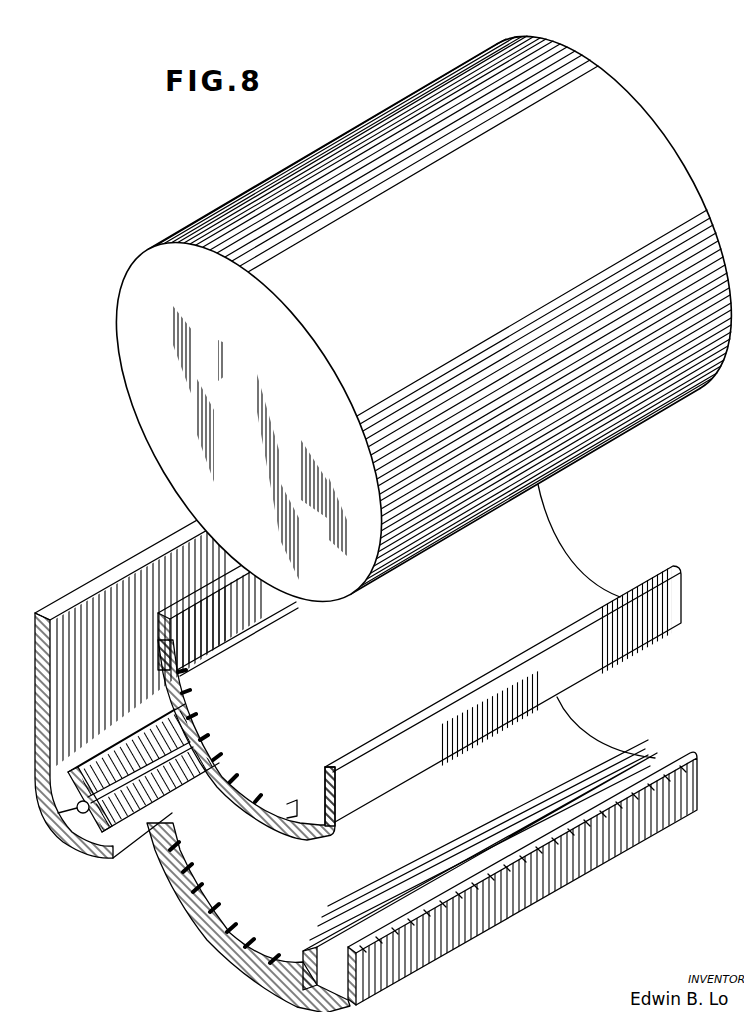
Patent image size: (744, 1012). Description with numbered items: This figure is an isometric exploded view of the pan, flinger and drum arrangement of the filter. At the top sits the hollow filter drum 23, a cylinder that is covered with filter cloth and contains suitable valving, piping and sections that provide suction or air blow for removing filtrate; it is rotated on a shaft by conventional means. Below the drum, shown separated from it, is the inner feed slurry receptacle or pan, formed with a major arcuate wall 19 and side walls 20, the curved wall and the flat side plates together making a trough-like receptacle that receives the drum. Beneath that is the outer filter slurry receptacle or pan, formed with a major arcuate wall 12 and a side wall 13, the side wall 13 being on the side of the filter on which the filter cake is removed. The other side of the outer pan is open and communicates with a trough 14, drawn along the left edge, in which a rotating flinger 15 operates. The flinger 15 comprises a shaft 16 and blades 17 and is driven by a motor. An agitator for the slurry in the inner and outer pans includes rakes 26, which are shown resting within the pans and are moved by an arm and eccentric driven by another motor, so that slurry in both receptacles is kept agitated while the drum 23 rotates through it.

The major arcuate wall 12 is at (226, 957).
The side wall 13 is at (443, 940).
The trough 14 is at (94, 853).
The flinger 15 is at (80, 826).
The shaft 16 is at (66, 816).
The blades 17 is at (68, 773).
The major arcuate wall 19 is at (258, 817).
The side walls 20 is at (158, 640).
The hollow filter drum 23 is at (373, 118).
The rakes 26 is at (565, 563).